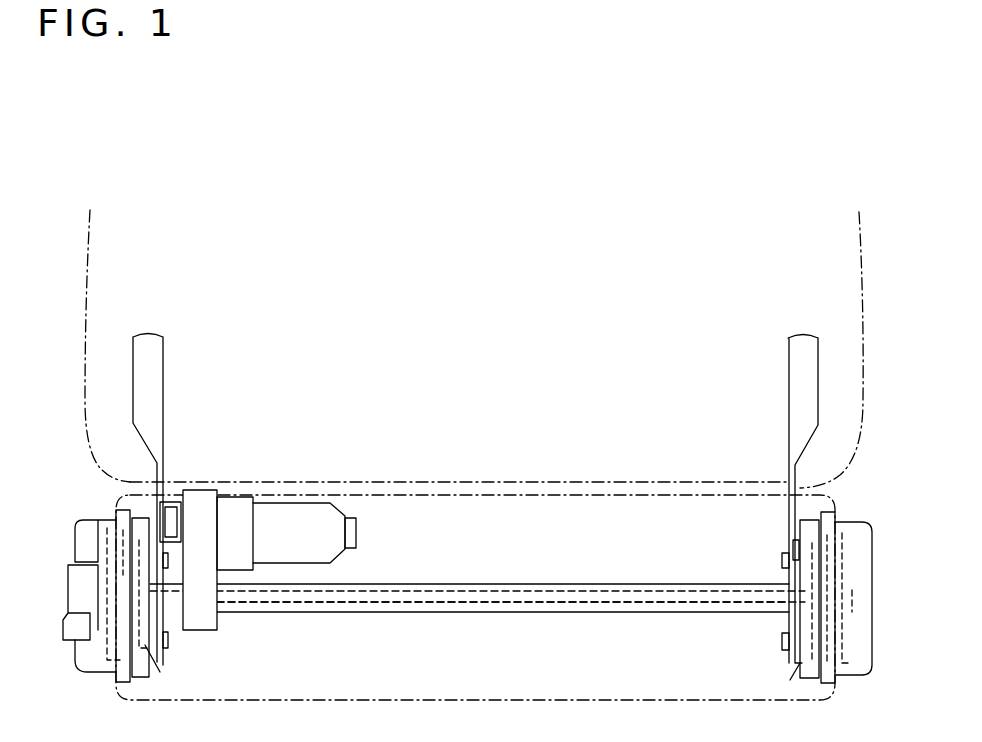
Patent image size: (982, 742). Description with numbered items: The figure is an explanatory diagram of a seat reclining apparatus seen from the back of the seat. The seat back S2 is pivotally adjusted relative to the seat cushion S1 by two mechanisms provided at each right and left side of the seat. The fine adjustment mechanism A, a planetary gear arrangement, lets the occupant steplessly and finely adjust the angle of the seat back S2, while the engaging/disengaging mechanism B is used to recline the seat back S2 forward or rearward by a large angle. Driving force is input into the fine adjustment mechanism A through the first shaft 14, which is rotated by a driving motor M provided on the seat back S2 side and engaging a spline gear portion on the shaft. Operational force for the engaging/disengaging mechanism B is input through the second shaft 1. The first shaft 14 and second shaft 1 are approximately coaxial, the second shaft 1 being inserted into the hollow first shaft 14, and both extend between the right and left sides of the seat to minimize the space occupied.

The seat back S2 is at (86, 262).
The seat cushion S1 is at (520, 497).
The driving motor M is at (291, 511).
The first shaft 14 is at (505, 585).
The second shaft 1 is at (590, 600).
The engaging/disengaging mechanism B is at (105, 540).
The fine adjustment mechanism A is at (160, 672).